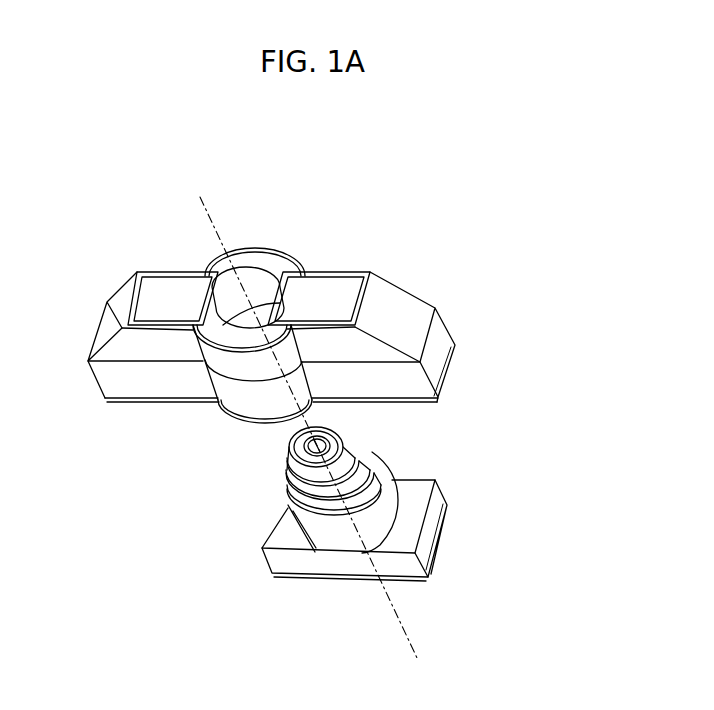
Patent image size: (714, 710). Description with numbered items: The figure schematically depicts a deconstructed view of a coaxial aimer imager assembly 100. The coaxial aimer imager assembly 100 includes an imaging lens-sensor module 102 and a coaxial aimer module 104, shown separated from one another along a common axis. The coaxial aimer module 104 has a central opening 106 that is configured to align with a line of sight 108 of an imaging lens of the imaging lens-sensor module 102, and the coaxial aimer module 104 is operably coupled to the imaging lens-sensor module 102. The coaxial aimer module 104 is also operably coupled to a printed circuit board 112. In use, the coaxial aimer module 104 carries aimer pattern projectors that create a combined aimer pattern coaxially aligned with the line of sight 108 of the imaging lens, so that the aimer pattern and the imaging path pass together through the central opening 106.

The coaxial aimer imager assembly 100 is at (490, 160).
The imaging lens-sensor module 102 is at (488, 522).
The coaxial aimer module 104 is at (514, 332).
The central opening 106 is at (238, 230).
The line of sight 108 is at (383, 579).
The printed circuit board (PCB) 112 is at (135, 402).